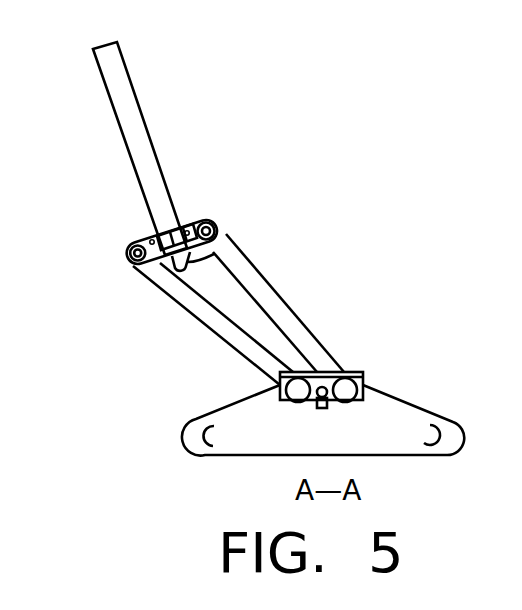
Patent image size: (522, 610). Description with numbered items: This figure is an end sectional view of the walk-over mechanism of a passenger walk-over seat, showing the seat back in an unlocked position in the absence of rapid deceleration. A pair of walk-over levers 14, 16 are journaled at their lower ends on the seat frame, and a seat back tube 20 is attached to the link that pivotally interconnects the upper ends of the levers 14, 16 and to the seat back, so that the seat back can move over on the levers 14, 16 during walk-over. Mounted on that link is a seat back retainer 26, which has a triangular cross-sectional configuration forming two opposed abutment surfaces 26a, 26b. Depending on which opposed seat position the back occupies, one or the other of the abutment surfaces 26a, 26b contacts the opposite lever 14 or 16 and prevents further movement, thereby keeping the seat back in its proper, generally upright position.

The lever 14 is at (273, 306).
The lever 16 is at (212, 311).
The seat back tube 20 is at (122, 96).
The seat back retainer 26 is at (219, 233).
The abutment surface 26a is at (153, 263).
The abutment surface 26b is at (228, 250).